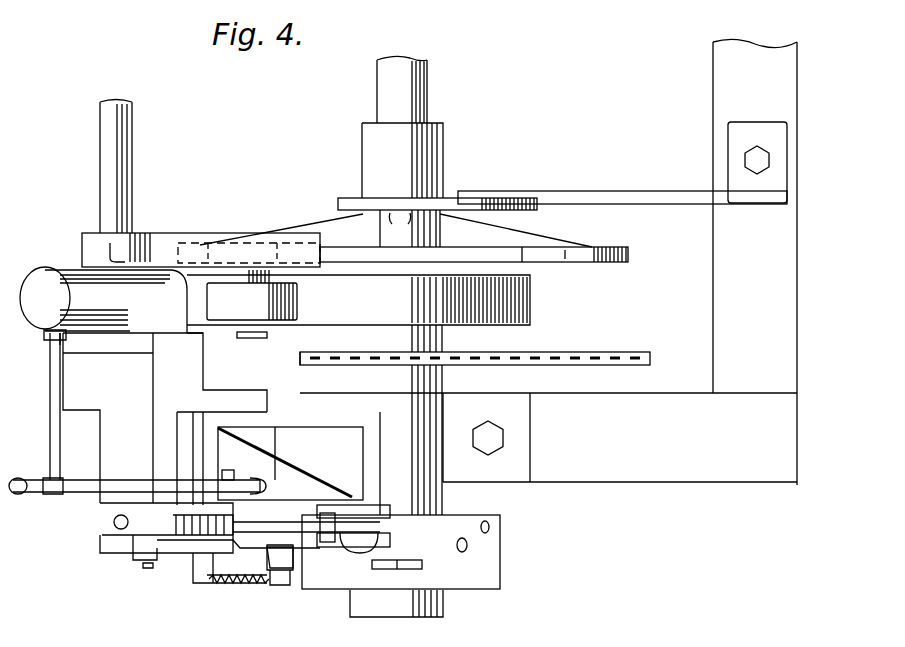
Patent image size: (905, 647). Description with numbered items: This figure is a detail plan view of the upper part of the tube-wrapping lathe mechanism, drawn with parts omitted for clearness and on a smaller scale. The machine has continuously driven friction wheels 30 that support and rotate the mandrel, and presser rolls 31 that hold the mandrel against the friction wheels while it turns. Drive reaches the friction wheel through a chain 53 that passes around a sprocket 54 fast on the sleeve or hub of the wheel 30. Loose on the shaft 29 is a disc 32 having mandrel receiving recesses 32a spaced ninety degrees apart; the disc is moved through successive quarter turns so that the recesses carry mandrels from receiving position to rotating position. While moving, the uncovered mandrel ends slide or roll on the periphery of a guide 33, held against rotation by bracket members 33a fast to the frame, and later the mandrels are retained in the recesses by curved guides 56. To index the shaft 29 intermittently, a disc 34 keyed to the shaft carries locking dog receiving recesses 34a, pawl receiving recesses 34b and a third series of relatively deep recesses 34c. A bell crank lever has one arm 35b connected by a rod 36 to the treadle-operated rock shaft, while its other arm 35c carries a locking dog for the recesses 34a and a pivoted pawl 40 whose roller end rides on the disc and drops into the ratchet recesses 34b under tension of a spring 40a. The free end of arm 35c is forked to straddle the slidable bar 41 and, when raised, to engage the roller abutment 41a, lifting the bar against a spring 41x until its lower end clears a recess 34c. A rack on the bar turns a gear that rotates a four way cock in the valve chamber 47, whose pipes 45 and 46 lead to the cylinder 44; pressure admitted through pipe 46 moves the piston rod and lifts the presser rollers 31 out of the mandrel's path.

The shaft 29 is at (400, 103).
The guide 33 is at (346, 205).
The bracket member 33a is at (627, 192).
The disc 32 is at (624, 236).
The mandrel receiving recess 32a is at (567, 260).
The curved guide 56 is at (199, 236).
The cylinder 44 is at (44, 268).
The friction wheel 30 is at (358, 300).
The presser roll 31 is at (246, 309).
The chain 53 is at (597, 352).
The sprocket 54 is at (317, 352).
The valve chamber 47 is at (222, 488).
The pipe 46 is at (232, 483).
The pipe 45 is at (112, 522).
The rod 36 is at (131, 553).
The spring 41x is at (185, 538).
The arm of bell crank lever 35b is at (188, 548).
The spring 40a is at (228, 585).
The pawl 40 is at (285, 582).
The slidable rod or bar 41 is at (263, 516).
The roller abutment means 41a is at (330, 545).
The arm of bell crank 35c is at (288, 523).
The disc 34 is at (482, 583).
The locking dog receiving recess 34a is at (468, 547).
The pawl receiving recess 34b is at (422, 565).
The deep recess 34c is at (490, 527).